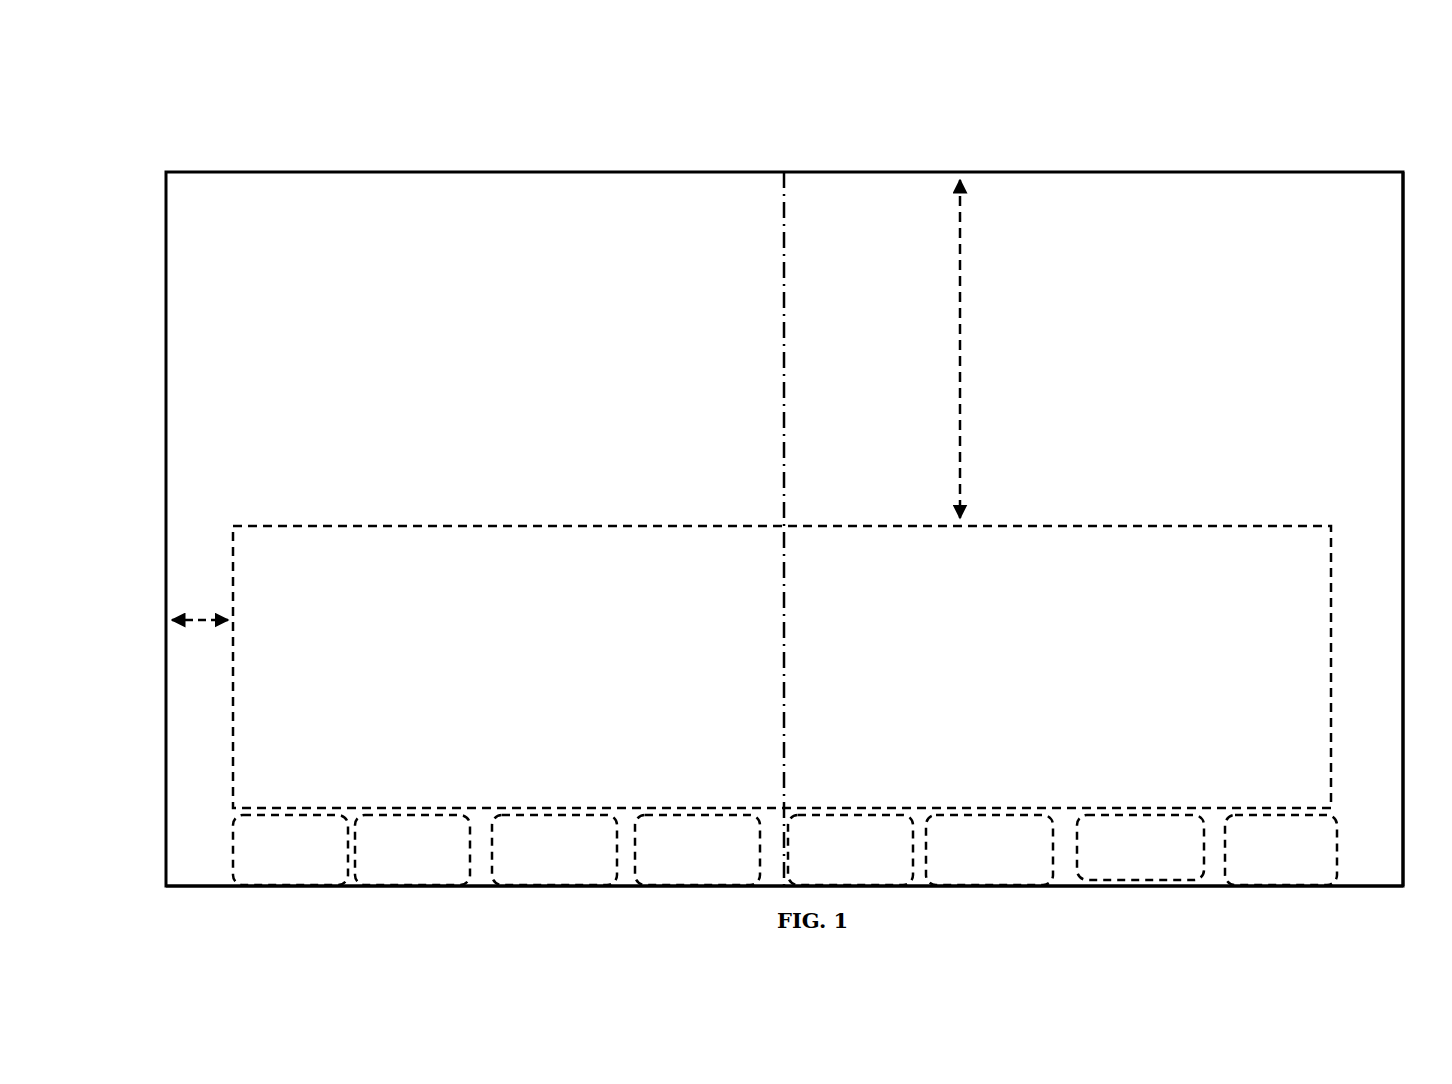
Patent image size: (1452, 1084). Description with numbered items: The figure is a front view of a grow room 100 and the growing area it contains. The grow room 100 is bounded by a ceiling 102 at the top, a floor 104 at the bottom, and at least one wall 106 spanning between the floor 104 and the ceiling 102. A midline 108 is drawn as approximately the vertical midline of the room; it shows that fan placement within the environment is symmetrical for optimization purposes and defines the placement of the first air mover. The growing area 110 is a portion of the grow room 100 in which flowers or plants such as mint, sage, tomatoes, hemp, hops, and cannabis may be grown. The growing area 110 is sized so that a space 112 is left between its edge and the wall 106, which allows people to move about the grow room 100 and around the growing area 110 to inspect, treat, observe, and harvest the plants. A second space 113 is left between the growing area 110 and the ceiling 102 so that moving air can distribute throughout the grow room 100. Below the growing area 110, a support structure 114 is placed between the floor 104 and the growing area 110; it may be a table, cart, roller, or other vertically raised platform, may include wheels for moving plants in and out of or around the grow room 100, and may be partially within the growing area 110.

The grow room 100 is at (292, 136).
The ceiling 102 is at (350, 173).
The floor 104 is at (300, 886).
The wall 106 is at (1402, 406).
The midline 108 is at (784, 388).
The growing area 110 is at (337, 552).
The space 112 is at (190, 620).
The second space 113 is at (958, 290).
The support structure 114 is at (553, 884).